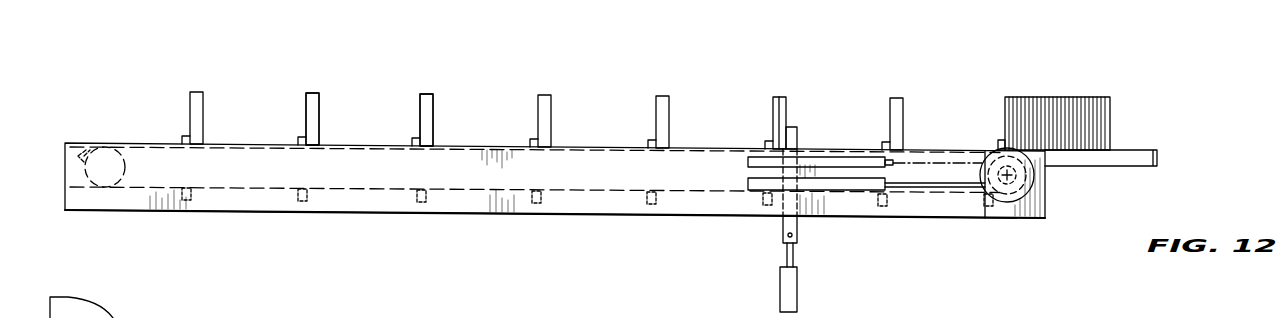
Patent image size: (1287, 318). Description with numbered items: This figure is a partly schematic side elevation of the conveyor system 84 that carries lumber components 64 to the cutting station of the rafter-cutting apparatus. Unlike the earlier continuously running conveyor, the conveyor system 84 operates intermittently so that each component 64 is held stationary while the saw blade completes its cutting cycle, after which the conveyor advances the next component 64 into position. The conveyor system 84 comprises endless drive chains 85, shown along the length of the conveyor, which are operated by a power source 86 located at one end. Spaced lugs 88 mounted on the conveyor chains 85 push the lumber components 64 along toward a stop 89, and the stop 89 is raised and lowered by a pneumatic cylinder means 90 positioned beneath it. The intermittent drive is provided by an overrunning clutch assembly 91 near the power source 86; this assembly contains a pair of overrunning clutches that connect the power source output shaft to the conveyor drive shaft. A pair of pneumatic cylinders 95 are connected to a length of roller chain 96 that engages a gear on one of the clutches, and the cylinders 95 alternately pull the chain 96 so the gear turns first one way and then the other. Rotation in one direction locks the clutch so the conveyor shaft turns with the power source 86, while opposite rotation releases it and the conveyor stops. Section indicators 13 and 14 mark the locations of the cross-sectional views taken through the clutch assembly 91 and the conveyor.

The section line 13- 13 is at (1008, 58).
The section line 14- 14 is at (445, 317).
The lumber component 64 is at (320, 102).
The conveyor system 84 is at (613, 177).
The endless drive chain 85 is at (470, 192).
The power source 86 is at (1018, 202).
The lug 88 is at (185, 135).
The stop 89 is at (798, 132).
The pneumatic cylinder means 90 is at (798, 297).
The overrunning clutch assembly 91 is at (1022, 183).
The pneumatic cylinder 95 is at (840, 165).
The roller chain 96 is at (941, 158).